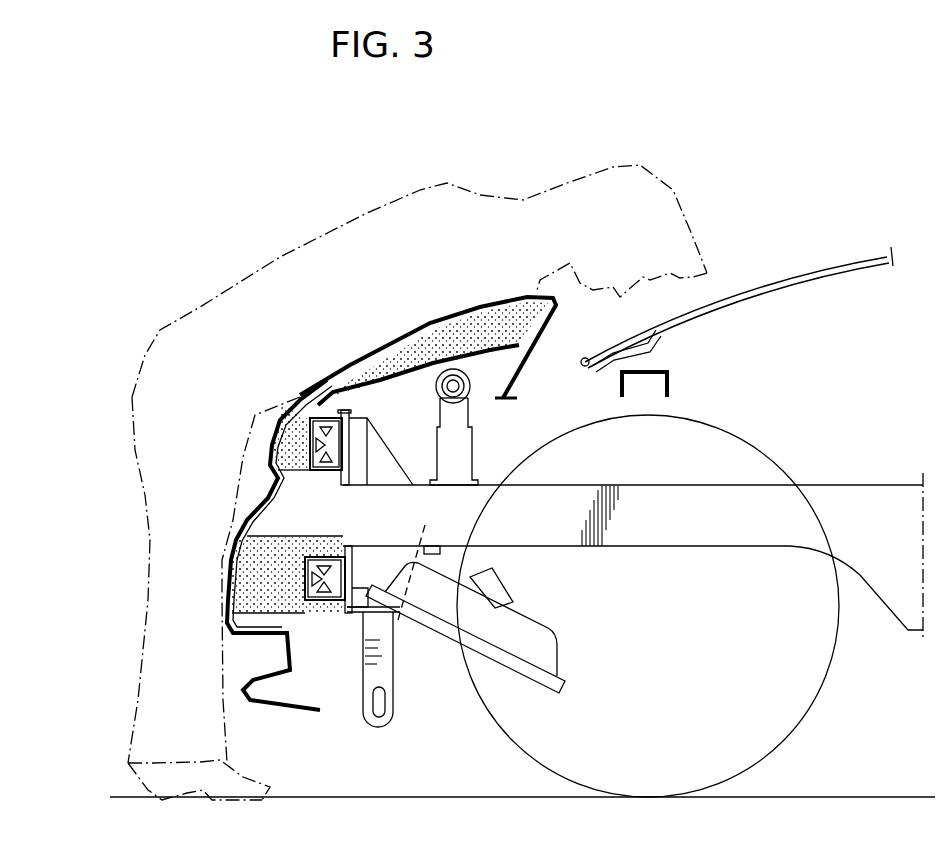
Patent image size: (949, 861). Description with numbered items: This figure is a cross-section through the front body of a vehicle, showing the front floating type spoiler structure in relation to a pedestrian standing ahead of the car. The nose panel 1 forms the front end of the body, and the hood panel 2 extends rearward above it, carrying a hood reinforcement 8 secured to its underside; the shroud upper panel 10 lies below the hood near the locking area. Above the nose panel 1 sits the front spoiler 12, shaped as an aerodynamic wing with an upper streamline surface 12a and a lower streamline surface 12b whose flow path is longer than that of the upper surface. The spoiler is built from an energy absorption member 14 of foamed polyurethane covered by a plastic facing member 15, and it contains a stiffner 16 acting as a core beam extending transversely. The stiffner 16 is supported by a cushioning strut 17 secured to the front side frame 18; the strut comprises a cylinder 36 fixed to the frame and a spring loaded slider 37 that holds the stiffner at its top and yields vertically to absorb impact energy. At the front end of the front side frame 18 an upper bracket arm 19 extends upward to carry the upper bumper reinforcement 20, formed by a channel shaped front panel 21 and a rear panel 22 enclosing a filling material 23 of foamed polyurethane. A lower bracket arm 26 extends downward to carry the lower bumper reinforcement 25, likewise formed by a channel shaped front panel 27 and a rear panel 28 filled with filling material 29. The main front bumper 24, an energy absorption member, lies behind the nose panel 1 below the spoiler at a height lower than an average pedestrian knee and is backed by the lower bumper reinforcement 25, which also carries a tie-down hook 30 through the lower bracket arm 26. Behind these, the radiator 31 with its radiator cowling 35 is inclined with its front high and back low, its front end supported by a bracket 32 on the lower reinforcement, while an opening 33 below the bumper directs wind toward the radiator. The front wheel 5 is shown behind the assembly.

The nose panel 1 is at (230, 547).
The hood panel 2 is at (767, 283).
The front wheel 5 is at (832, 672).
The hood reinforcement 8 is at (662, 327).
The shroud upper panel 10 is at (672, 383).
The front spoiler 12 is at (399, 334).
The upper streamline surface 12a is at (430, 327).
The lower streamline surface 12b is at (377, 377).
The energy absorption member 14 is at (467, 337).
The plastic facing member 15 is at (517, 300).
The stiffner 16 is at (468, 398).
The cushioning strut 17 is at (434, 432).
The front side frame 18 is at (663, 533).
The upper bracket arm 19 is at (365, 433).
The upper bumper reinforcement 20 is at (319, 476).
The channel shaped front panel 21 is at (303, 448).
The rear panel 22 is at (350, 455).
The filling material 23 is at (329, 413).
The main front bumper 24 is at (247, 593).
The lower bumper reinforcement 25 is at (320, 612).
The lower bracket arm 26 is at (412, 553).
The channel shaped front panel 27 is at (307, 567).
The rear panel 28 is at (353, 556).
The filling material 29 is at (297, 600).
The tie-down hook 30 is at (389, 672).
The radiator 31 is at (530, 682).
The bracket 32 is at (368, 588).
The opening 33 is at (210, 715).
The radiator cowling 35 is at (557, 648).
The cylinder 36 is at (472, 458).
The spring loaded slider 37 is at (440, 408).